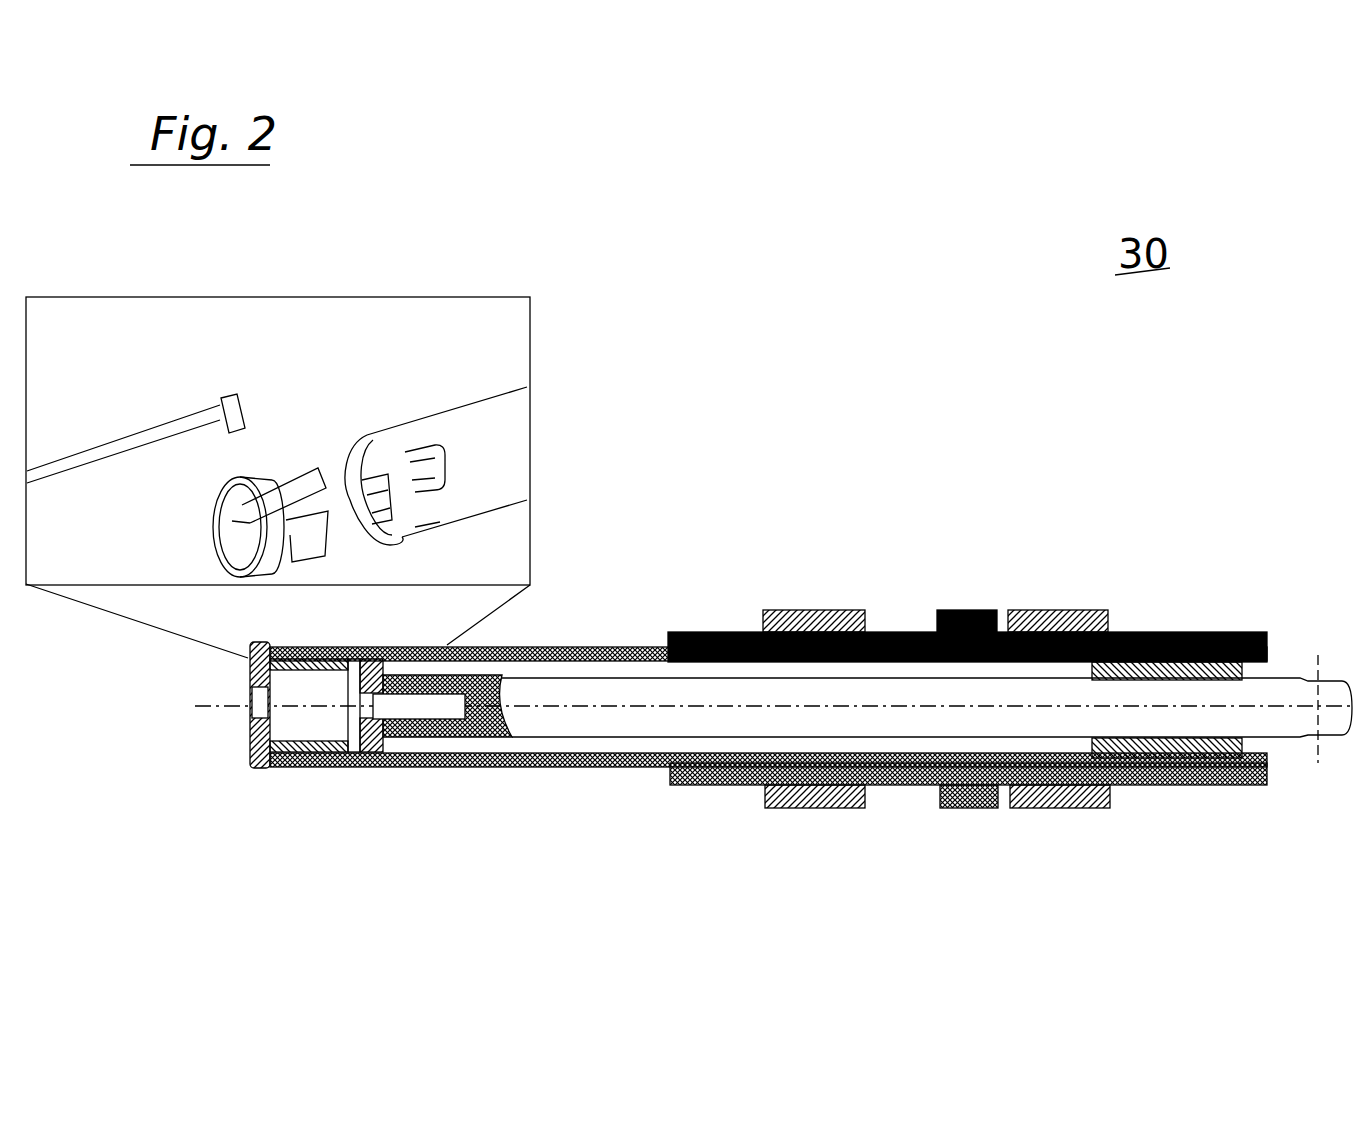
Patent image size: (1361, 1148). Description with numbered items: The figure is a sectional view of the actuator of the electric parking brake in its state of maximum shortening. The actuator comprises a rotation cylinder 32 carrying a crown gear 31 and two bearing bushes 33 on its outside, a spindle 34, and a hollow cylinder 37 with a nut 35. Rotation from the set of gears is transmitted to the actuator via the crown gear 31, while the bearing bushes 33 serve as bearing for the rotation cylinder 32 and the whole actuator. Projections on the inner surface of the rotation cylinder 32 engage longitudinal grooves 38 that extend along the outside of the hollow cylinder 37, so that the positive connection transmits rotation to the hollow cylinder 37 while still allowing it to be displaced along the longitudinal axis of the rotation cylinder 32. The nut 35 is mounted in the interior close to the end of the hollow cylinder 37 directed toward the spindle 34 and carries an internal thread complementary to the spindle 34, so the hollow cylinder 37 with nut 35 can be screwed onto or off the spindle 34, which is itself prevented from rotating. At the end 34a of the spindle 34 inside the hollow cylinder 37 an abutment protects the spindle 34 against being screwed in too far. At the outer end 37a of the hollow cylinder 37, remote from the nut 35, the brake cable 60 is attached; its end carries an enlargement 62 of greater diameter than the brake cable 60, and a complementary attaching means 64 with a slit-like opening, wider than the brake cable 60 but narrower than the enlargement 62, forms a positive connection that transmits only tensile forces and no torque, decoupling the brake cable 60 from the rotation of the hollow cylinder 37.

The crown gear 31 is at (968, 610).
The rotation cylinder 32 is at (726, 632).
The bearing bushes 33 is at (822, 610).
The spindle 34 is at (898, 720).
The end of the spindle 34a is at (398, 712).
The nut 35 is at (1175, 662).
The hollow cylinder 37 is at (457, 403).
The outer end of the hollow cylinder 37a is at (265, 767).
The longitudinal grooves 38 is at (578, 647).
The brake cable 60 is at (97, 447).
The enlargement 62 is at (229, 395).
The attaching means 64 is at (293, 463).